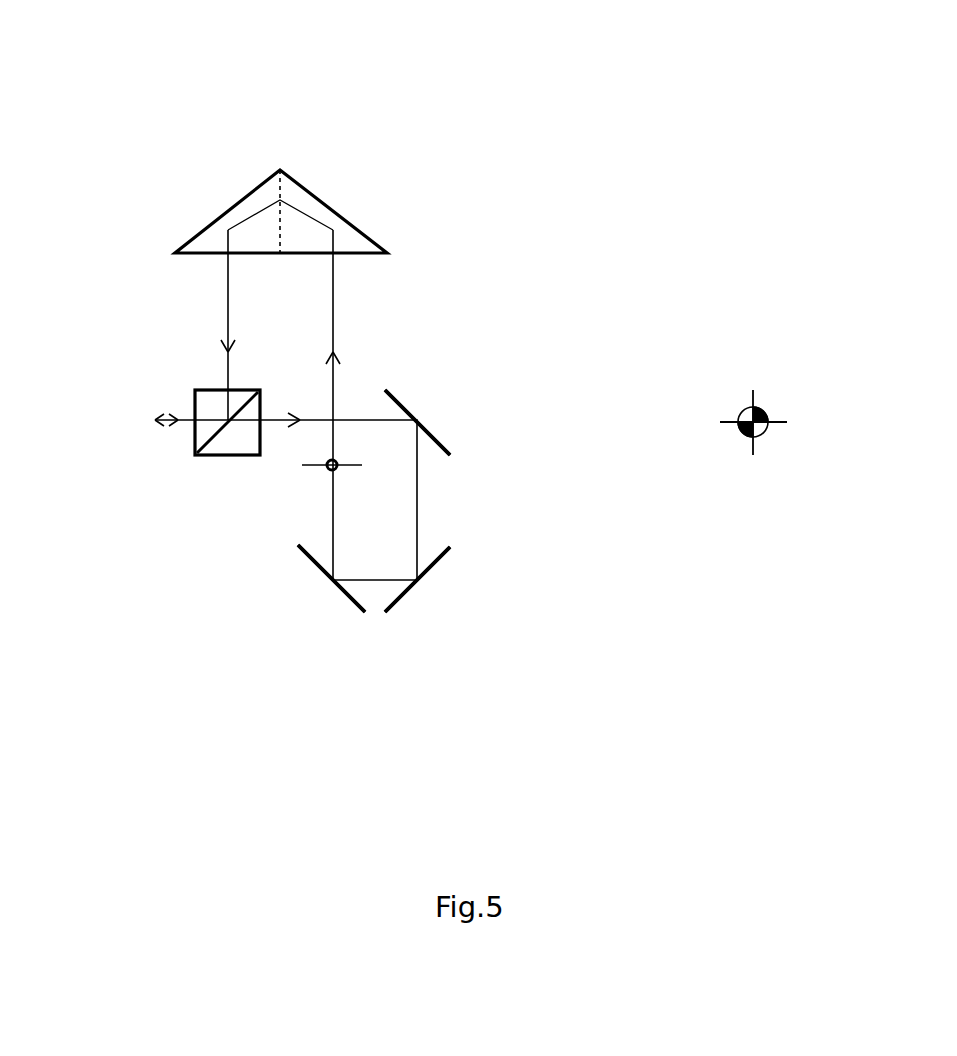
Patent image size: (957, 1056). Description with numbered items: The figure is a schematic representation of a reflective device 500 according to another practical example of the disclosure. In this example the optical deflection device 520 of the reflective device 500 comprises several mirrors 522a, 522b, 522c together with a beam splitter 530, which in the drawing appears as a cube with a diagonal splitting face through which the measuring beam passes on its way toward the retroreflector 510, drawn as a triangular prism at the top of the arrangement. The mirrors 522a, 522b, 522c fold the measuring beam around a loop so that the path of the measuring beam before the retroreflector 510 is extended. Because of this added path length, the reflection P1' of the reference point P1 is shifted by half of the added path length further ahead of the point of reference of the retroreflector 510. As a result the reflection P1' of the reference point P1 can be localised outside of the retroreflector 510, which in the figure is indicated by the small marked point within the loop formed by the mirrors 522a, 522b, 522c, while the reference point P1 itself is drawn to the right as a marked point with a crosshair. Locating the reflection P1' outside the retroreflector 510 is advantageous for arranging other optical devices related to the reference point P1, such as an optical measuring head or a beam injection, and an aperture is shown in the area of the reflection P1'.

The reflective device 500 is at (298, 125).
The retroreflector 510 is at (320, 200).
The optical deflection device 520 is at (128, 320).
The mirror 522a is at (400, 403).
The mirror 522b is at (442, 556).
The mirror 522c is at (310, 556).
The beam splitter 530 is at (195, 402).
The reference point P1 is at (763, 432).
The reflection of the reference point P1' is at (346, 480).